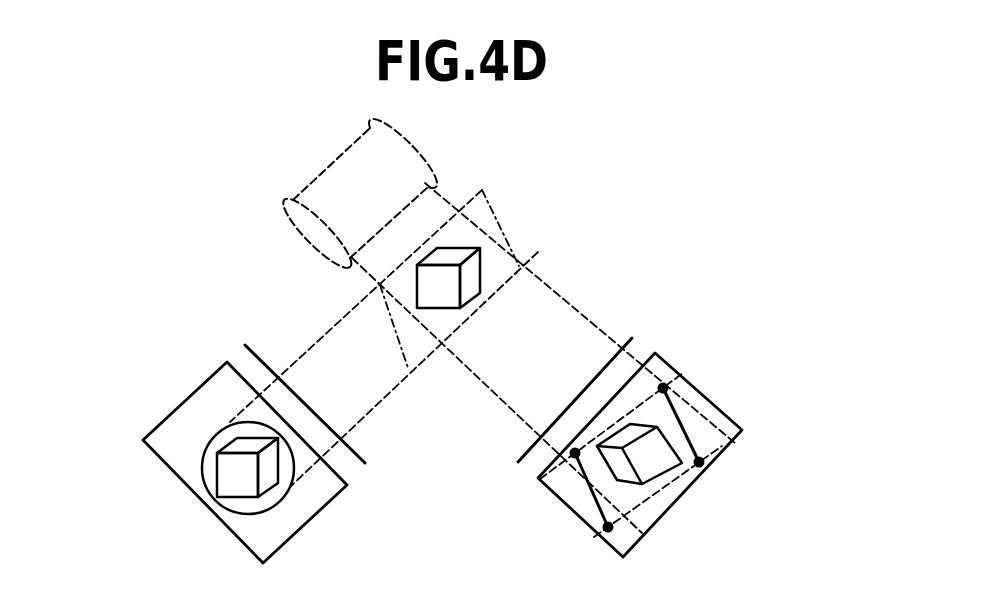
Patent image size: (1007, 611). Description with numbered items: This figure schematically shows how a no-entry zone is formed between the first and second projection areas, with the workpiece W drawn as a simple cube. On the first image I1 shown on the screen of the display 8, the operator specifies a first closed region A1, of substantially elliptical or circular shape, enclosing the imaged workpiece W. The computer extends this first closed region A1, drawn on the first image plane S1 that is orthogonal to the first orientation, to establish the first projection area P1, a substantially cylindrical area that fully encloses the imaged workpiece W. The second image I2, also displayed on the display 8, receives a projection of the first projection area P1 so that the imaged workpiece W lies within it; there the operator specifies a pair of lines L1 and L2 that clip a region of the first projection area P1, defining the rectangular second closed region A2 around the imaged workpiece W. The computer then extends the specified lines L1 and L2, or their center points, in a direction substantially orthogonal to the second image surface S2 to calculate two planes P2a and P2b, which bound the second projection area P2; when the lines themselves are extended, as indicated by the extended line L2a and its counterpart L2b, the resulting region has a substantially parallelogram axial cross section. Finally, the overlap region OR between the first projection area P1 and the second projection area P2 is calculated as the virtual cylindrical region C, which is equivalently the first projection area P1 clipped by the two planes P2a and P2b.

The virtual cylindrical region C is at (418, 152).
The overlap region OR is at (453, 238).
The first projection area P1 is at (317, 341).
The second projection area P2 is at (543, 358).
The plane P2a is at (568, 314).
The plane P2b is at (488, 388).
The extended line L2a is at (490, 203).
The second boundary line L2b is at (408, 368).
The first image plane S1 is at (355, 448).
The second image surface S2 is at (522, 445).
The display 8 is at (442, 432).
The first image I1 is at (220, 387).
The second image I2 is at (563, 485).
The first closed region A1 is at (232, 513).
The second closed region A2 is at (676, 437).
The line L1 is at (602, 513).
The line L2 is at (692, 447).
The workpiece W is at (470, 280).